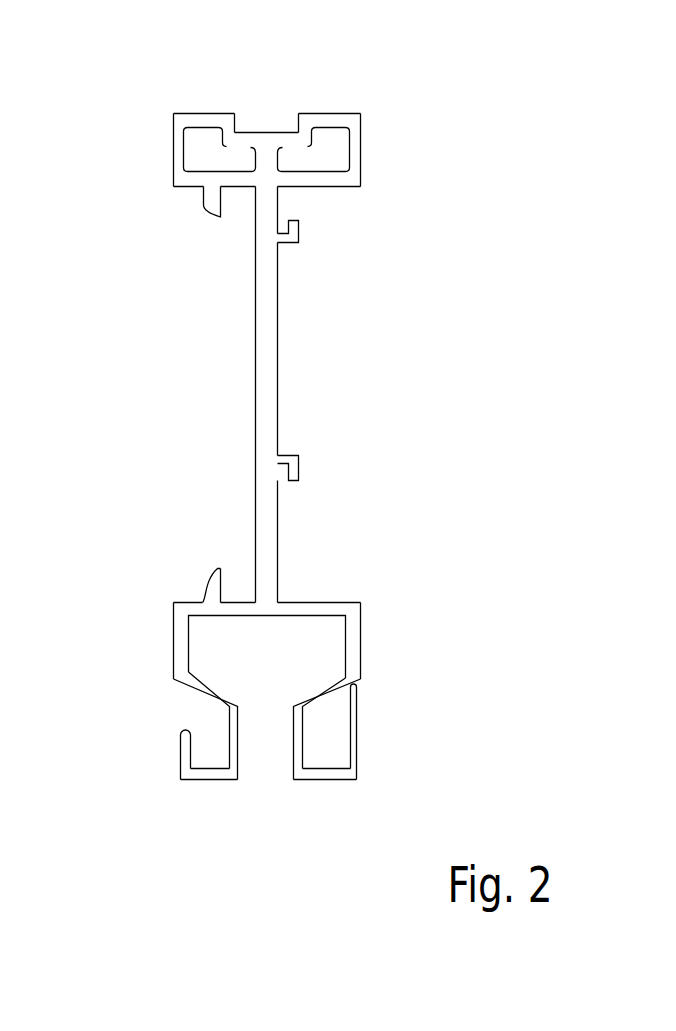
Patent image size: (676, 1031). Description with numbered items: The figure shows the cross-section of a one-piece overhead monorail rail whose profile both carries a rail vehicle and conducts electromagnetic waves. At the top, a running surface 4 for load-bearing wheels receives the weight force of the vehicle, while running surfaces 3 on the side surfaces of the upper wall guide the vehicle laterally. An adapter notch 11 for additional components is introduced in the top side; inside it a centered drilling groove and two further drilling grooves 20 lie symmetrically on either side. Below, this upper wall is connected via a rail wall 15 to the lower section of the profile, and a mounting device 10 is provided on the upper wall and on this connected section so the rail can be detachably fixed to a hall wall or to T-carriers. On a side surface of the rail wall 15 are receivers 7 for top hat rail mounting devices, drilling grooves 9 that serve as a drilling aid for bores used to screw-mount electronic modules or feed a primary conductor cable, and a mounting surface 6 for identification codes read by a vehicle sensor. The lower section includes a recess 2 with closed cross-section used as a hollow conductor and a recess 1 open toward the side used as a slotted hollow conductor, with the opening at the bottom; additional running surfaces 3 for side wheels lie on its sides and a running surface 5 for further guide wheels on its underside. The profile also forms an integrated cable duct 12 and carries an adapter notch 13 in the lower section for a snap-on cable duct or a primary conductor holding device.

The slotted hollow conductor 1 is at (260, 655).
The hollow conductor 2 is at (321, 727).
The running surfaces for guide wheels 3 is at (172, 152).
The running surface 4 is at (192, 112).
The running surface for additional guide wheels 5 is at (203, 782).
The mounting surface 6 is at (358, 747).
The receivers for top hat rails 7 is at (301, 233).
The drilling grooves 9 is at (279, 272).
The mounting device 10 is at (217, 565).
The adapter notch 11 is at (265, 104).
The integrated cable duct 12 is at (208, 740).
The adapter notch 13 is at (197, 597).
The rail wall 15 is at (262, 314).
The drilling grooves 20 is at (285, 130).